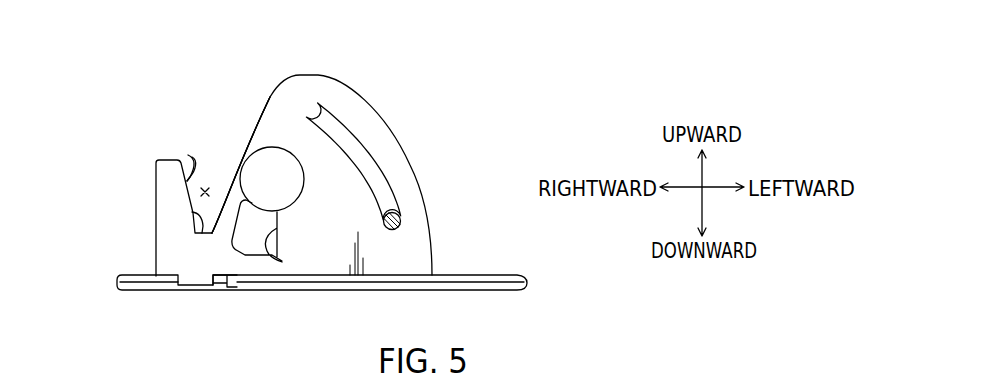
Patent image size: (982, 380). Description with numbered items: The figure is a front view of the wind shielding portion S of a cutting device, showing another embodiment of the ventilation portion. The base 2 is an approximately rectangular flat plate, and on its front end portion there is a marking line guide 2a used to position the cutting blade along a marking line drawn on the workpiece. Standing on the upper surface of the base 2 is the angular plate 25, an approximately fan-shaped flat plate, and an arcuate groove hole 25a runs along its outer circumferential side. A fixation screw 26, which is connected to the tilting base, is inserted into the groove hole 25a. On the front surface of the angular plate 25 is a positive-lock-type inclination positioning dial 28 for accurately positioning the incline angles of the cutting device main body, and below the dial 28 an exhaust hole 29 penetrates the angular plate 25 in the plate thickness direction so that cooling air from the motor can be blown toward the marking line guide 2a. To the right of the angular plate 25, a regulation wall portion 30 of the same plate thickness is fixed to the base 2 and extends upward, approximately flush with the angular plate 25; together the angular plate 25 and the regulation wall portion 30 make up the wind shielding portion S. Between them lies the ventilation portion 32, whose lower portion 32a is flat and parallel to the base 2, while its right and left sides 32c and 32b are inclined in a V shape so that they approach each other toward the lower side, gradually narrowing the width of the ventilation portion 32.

The base 2 is at (477, 275).
The marking line guide 2a is at (213, 283).
The angular plate 25 is at (401, 143).
The arcuate groove hole 25a is at (366, 140).
The fixation screw 26 is at (401, 215).
The inclination positioning dial 28 is at (270, 177).
The exhaust hole 29 is at (282, 262).
The regulation wall portion 30 is at (167, 178).
The ventilation portion 32 is at (208, 179).
The lower portion 32a is at (190, 210).
The left side 32b is at (232, 181).
The right side 32c is at (188, 155).
The wind shielding portion S is at (320, 66).